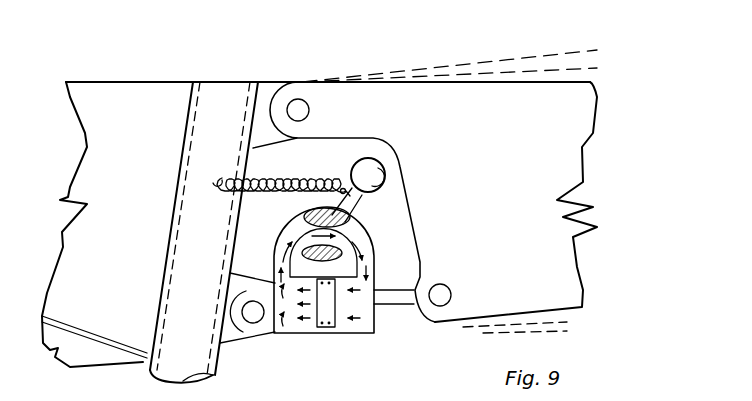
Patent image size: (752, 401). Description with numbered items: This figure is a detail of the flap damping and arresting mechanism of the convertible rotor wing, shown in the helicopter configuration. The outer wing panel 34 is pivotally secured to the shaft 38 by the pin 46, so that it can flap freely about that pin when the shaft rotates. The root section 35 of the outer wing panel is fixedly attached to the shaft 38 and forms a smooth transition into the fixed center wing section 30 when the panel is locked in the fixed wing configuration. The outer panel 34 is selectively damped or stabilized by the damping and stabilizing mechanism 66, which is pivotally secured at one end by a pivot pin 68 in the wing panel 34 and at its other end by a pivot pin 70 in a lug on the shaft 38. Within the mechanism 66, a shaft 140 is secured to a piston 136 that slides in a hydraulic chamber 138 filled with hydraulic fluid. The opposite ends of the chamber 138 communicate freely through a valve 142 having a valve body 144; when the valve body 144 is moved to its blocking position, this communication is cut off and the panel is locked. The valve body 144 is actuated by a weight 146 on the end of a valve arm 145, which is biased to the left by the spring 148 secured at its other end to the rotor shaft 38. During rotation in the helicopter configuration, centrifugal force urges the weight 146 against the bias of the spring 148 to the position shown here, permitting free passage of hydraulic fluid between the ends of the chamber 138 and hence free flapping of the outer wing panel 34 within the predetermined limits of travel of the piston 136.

The fixed center wing section 30 is at (88, 360).
The outer wing panel 34 is at (485, 97).
The root section 35 is at (118, 82).
The shaft 38 is at (180, 170).
The pin 46 is at (298, 108).
The damping and stabilizing mechanism 66 is at (372, 238).
The pivot pin 68 is at (440, 306).
The pivot pin 70 is at (257, 323).
The piston 136 is at (341, 328).
The hydraulic chamber 138 is at (312, 330).
The shaft 140 is at (400, 305).
The valve 142 is at (350, 219).
The valve body 144 is at (338, 188).
The valve arm 145 is at (357, 207).
The weight 146 is at (387, 160).
The spring 148 is at (295, 188).